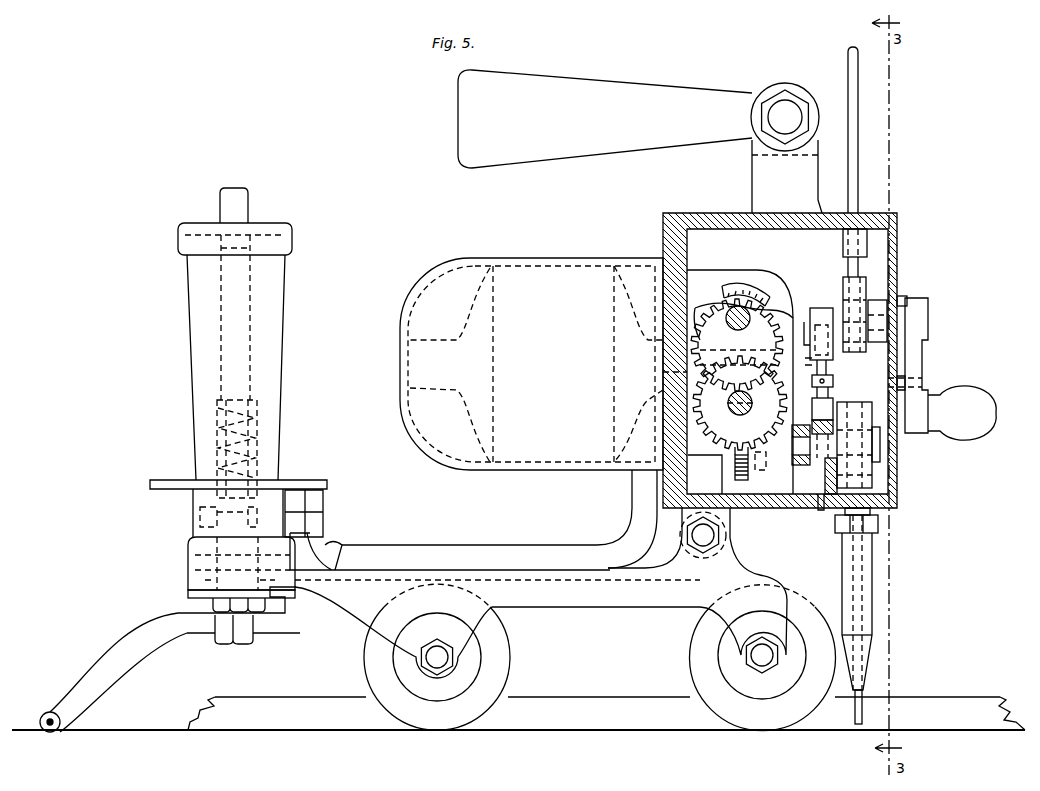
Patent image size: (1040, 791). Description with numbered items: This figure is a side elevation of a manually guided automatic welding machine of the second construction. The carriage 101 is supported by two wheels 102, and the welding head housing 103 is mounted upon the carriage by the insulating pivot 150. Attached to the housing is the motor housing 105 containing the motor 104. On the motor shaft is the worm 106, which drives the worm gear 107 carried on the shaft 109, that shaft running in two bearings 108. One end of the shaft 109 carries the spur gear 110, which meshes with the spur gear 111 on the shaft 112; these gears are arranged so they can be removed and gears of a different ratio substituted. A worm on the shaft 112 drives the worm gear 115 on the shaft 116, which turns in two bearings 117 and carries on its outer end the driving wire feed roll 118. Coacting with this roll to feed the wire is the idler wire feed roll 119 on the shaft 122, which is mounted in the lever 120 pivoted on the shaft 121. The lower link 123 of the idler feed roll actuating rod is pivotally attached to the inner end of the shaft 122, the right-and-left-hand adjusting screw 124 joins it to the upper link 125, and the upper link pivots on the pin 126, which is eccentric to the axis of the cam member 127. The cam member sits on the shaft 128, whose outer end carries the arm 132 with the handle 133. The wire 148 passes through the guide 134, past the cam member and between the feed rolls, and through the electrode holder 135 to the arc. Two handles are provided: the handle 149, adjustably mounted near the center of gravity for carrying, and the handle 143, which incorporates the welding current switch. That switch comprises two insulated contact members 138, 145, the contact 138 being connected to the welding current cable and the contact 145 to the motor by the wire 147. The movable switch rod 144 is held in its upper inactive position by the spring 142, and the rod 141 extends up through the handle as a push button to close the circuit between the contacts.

The carriage 101 is at (600, 597).
The wheels 102 is at (510, 656).
The welding head housing 103 is at (707, 213).
The motor 104 is at (530, 384).
The motor housing 105 is at (550, 471).
The worm 106 is at (773, 338).
The worm gear 107 is at (763, 292).
The bearings 108 is at (745, 270).
The shaft 109 is at (727, 321).
The spur gear 110 is at (700, 308).
The spur gear 111 is at (665, 373).
The shaft 112 is at (753, 401).
The worm gear 115 is at (749, 479).
The shaft 116 is at (768, 464).
The bearings 117 is at (822, 530).
The driving wire feed roll 118 is at (928, 389).
The idler wire feed roll 119 is at (872, 484).
The lever 120 is at (798, 466).
The shaft 121 is at (820, 512).
The shaft 122 is at (881, 448).
The lower link 123 is at (826, 406).
The right-and-left-hand adjusting screw 124 is at (826, 381).
The upper link 125 is at (801, 361).
The pin 126 is at (815, 318).
The cam member 127 is at (878, 318).
The shaft 128 is at (862, 291).
The arm 132 is at (920, 353).
The handle 133 is at (982, 413).
The guide 134 is at (843, 243).
The electrode holder 135 is at (868, 593).
The contact member 138 is at (230, 561).
The rod 141 is at (218, 284).
The spring 142 is at (255, 466).
The handle 143 is at (270, 327).
The movable switch rod 144 is at (255, 421).
The contact member 145 is at (222, 521).
The wire 147 is at (432, 548).
The wire 148 is at (850, 93).
The handle 149 is at (587, 98).
The insulating pivot 150 is at (712, 538).